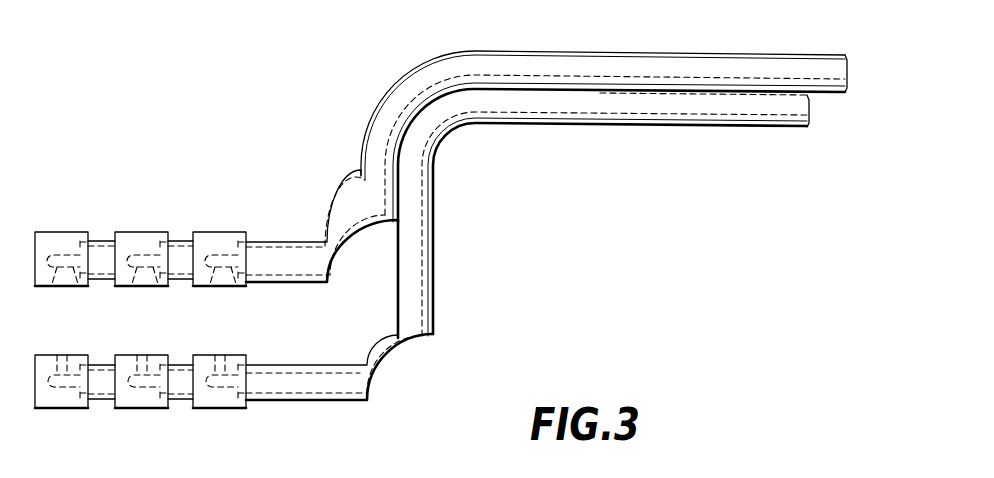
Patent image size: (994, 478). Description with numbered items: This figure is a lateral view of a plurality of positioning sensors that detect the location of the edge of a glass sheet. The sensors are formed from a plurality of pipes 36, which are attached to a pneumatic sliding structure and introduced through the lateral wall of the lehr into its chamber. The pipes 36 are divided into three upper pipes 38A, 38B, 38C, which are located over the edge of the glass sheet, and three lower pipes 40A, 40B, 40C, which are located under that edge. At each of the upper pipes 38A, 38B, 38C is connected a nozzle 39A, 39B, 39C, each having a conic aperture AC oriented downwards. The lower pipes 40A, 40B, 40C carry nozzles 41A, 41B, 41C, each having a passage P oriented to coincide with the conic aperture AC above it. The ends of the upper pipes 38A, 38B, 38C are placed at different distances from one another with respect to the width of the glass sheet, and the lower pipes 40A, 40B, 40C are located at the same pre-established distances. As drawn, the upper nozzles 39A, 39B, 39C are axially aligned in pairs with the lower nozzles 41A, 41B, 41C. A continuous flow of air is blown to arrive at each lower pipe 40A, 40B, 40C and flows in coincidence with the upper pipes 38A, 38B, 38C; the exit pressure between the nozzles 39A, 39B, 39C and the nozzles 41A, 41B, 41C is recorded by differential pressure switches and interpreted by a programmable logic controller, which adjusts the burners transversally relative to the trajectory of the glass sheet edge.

The pipes 36 is at (364, 88).
The upper pipe 38A is at (107, 240).
The upper pipe 38B is at (185, 241).
The upper pipe 38C is at (302, 242).
The nozzle 39A is at (68, 232).
The nozzle 39B is at (148, 233).
The nozzle 39C is at (222, 254).
The lower pipe 40A is at (100, 402).
The lower pipe 40B is at (180, 402).
The lower pipe 40C is at (347, 403).
The nozzle 41A is at (60, 393).
The nozzle 41B is at (143, 410).
The nozzle 41C is at (230, 410).
The passage P is at (58, 357).
The conic aperture AC is at (226, 289).